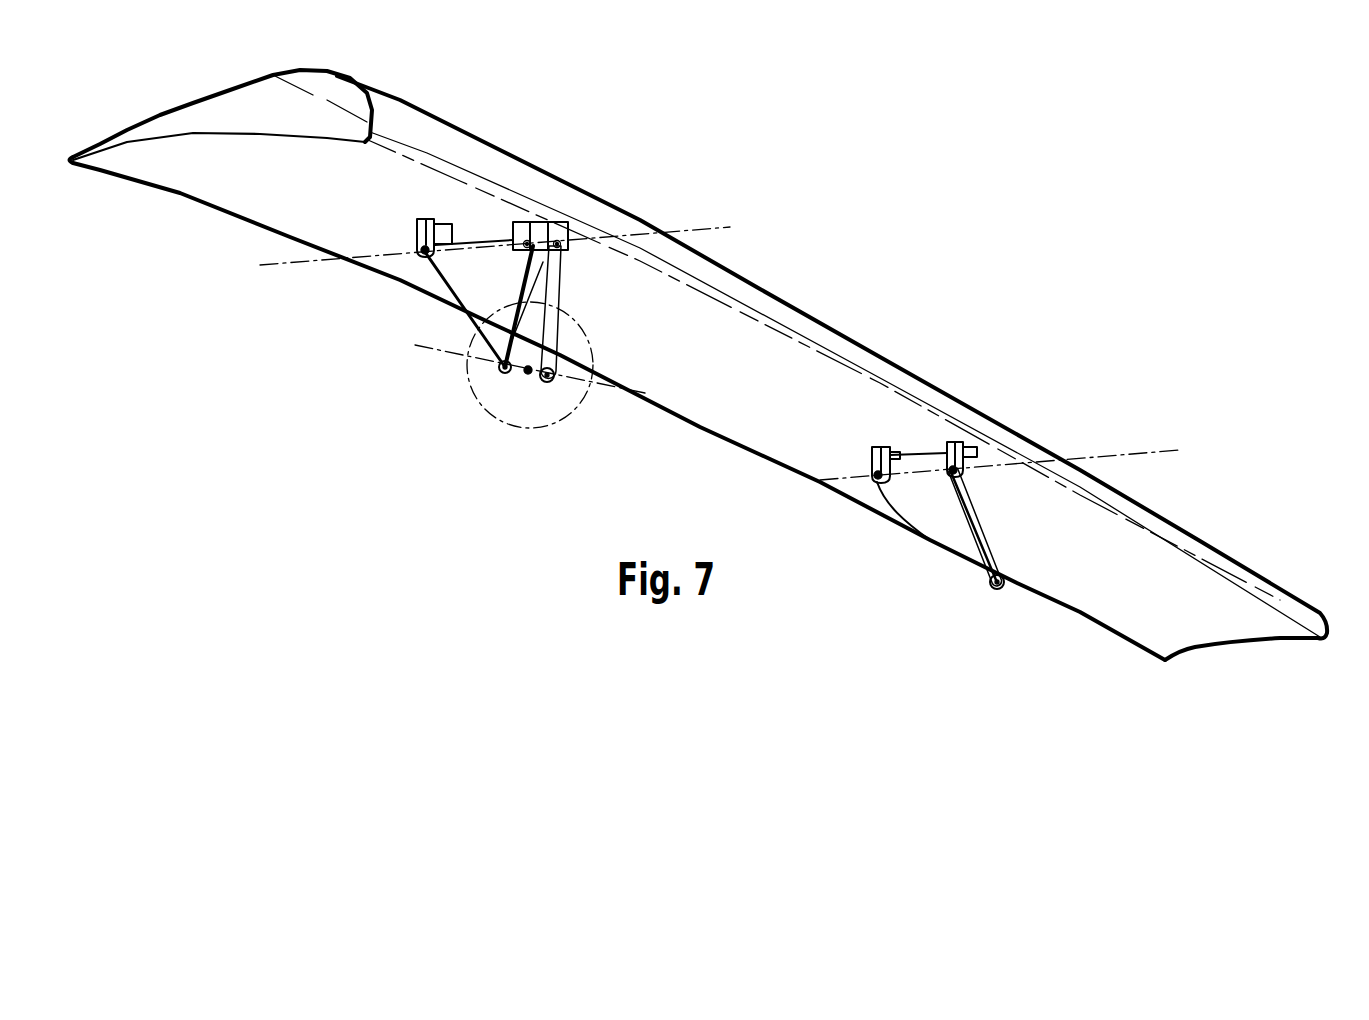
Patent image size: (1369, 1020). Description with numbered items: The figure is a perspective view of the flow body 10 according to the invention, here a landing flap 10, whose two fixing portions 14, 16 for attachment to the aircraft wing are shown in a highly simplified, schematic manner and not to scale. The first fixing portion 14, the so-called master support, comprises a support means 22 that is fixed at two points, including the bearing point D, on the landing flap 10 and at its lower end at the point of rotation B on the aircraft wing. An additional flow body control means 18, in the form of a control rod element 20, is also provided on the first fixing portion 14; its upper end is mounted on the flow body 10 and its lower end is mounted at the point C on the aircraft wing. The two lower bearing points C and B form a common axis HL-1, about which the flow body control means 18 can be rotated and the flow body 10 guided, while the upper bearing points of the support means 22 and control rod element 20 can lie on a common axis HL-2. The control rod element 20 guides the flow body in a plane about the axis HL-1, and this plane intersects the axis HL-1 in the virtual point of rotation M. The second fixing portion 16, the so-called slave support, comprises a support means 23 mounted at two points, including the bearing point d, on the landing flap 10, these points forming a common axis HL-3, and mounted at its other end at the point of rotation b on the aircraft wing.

The flow body 10 is at (1220, 533).
The first fixing portion 14 is at (502, 312).
The second fixing portion 16 is at (925, 607).
The flow body control means 18 is at (574, 270).
The control rod element 20 is at (543, 324).
The support means 22 is at (442, 292).
The support means 23 is at (999, 542).
The bearing point D is at (431, 208).
The bearing point C is at (491, 390).
The virtual point of rotation M is at (527, 378).
The bearing point B is at (548, 410).
The axis HL-1 is at (593, 390).
The axis HL-2 is at (713, 227).
The axis HL-3 is at (1116, 456).
The bearing point d is at (887, 434).
The bearing point b is at (993, 607).